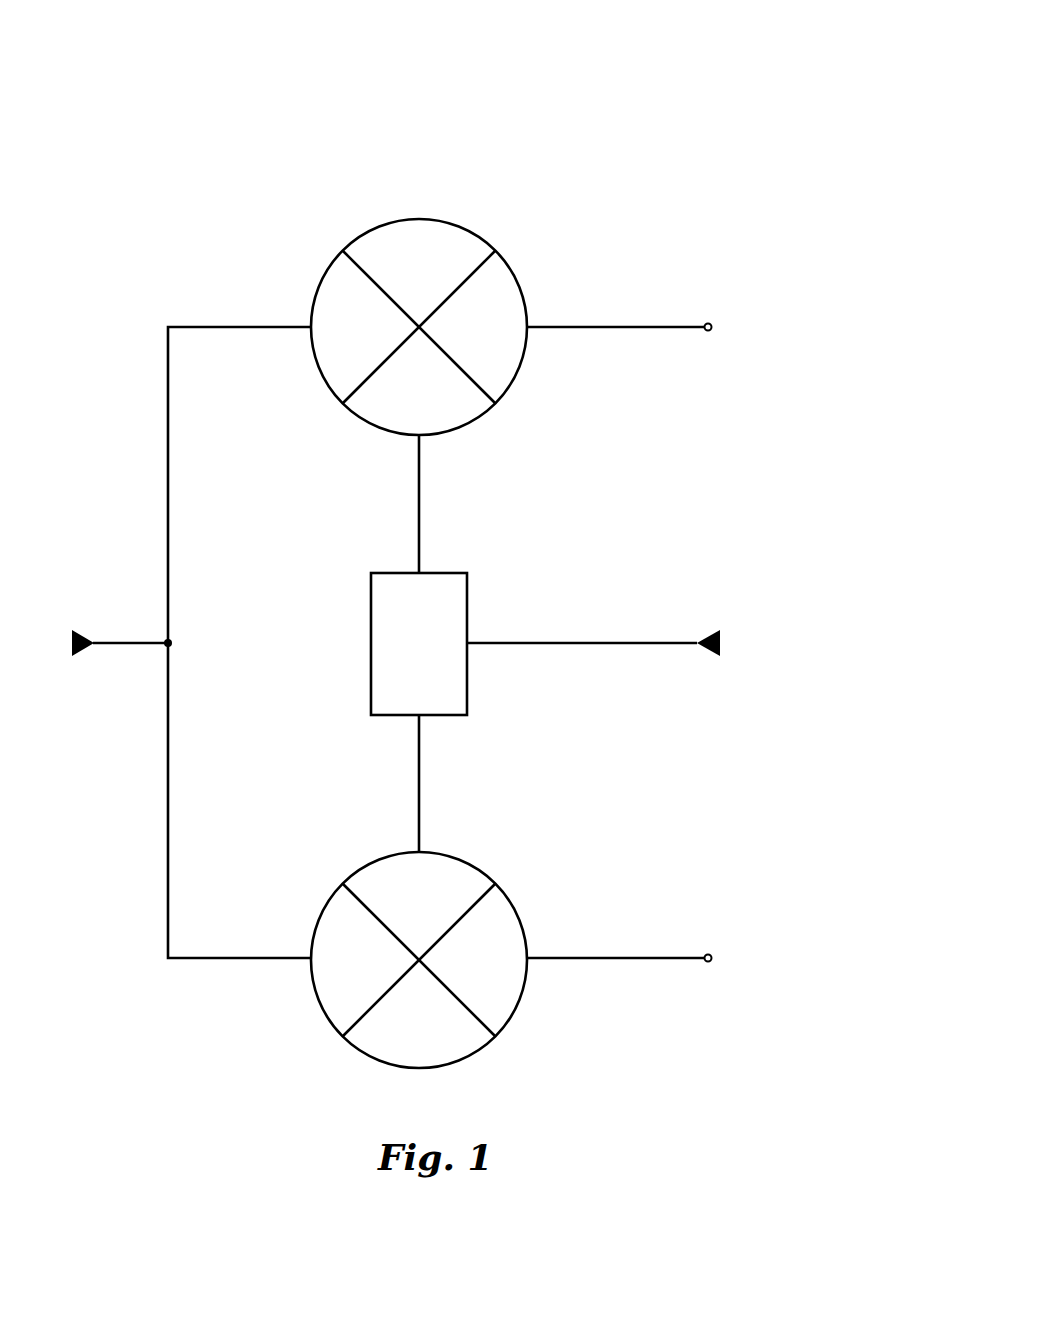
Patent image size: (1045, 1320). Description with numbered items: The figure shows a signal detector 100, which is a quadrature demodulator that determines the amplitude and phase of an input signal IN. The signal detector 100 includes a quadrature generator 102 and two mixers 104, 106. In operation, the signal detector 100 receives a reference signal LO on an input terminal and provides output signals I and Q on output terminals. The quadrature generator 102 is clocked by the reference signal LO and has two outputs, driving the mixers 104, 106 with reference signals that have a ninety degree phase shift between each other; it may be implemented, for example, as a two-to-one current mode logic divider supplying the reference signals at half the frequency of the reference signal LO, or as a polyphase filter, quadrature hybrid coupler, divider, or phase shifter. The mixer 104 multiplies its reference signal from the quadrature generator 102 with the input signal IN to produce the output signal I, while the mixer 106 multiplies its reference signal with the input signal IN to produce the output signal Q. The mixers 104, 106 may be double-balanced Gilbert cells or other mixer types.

The signal detector 100 is at (742, 65).
The quadrature generator 102 is at (340, 646).
The mixer 104 is at (545, 226).
The mixer 106 is at (545, 856).